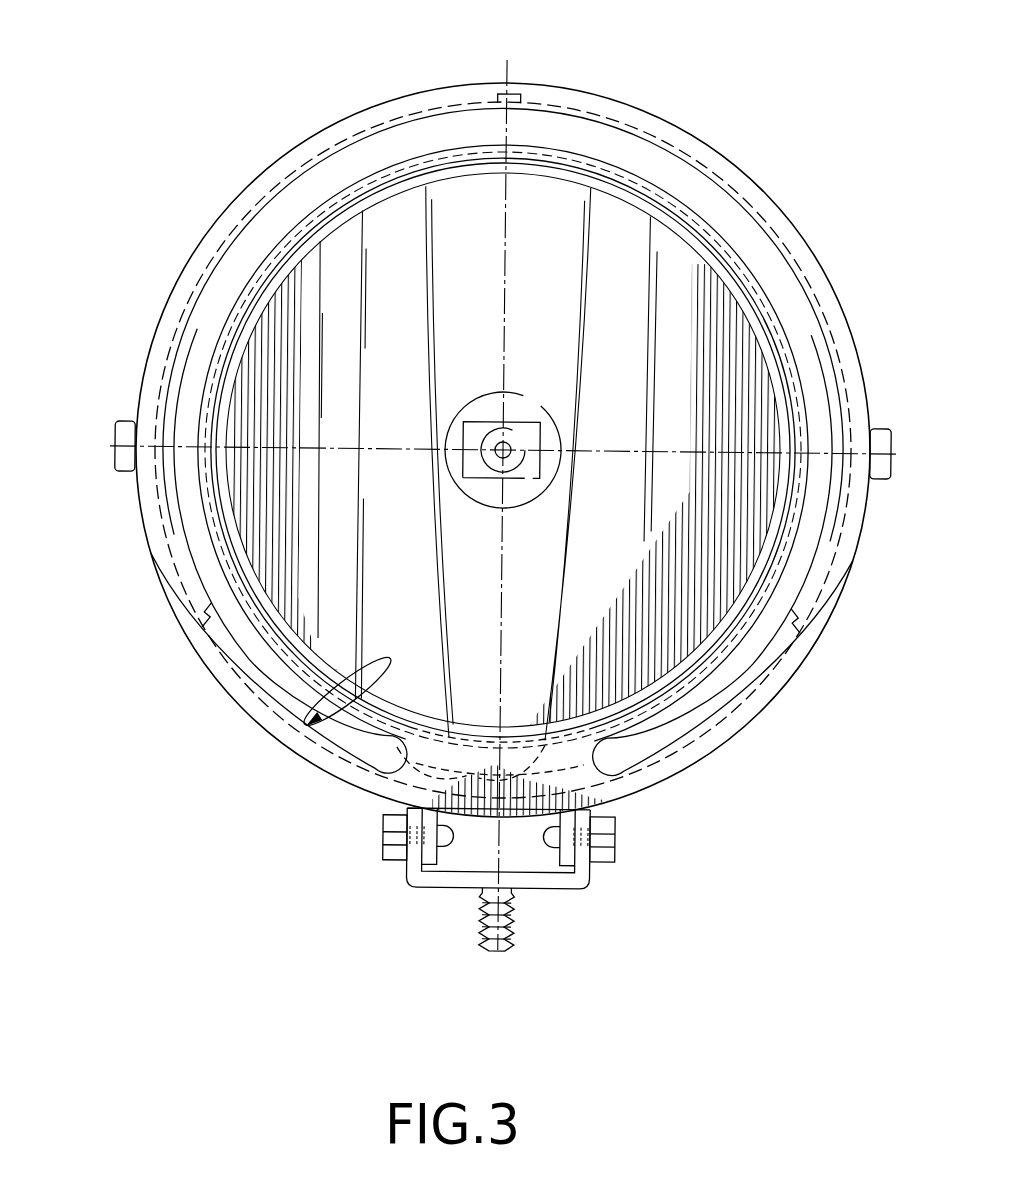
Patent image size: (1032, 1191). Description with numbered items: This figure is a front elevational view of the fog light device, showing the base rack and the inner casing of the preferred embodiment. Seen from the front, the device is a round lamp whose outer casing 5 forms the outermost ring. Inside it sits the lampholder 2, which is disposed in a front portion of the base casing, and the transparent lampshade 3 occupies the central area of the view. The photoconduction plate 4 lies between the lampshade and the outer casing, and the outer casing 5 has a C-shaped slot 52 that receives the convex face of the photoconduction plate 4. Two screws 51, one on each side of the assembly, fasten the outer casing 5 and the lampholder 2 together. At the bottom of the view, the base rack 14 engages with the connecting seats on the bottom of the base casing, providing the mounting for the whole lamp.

The lampholder 2 is at (273, 710).
The transparent lampshade 3 is at (623, 240).
The photoconduction plate 4 is at (230, 632).
The outer casing 5 is at (223, 677).
The base rack 14 is at (580, 884).
The screws 51 is at (124, 430).
The C-shaped slot 52 is at (353, 690).